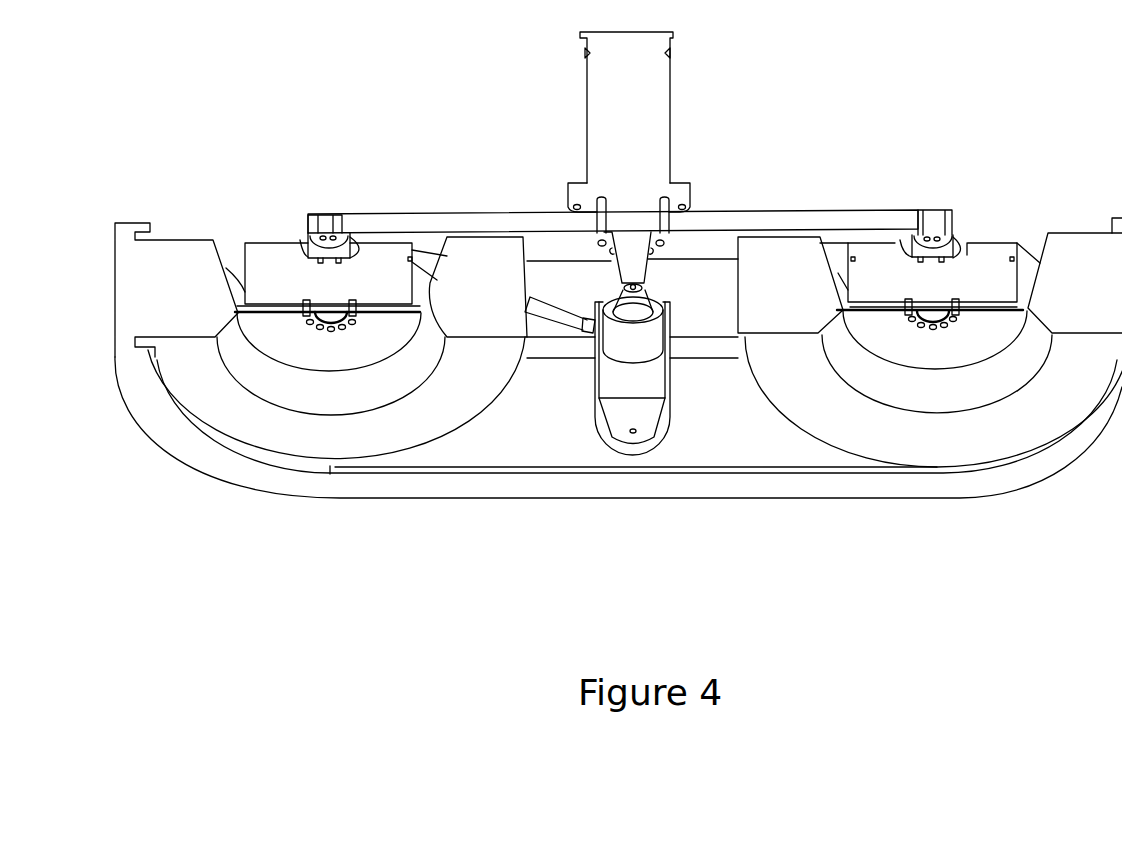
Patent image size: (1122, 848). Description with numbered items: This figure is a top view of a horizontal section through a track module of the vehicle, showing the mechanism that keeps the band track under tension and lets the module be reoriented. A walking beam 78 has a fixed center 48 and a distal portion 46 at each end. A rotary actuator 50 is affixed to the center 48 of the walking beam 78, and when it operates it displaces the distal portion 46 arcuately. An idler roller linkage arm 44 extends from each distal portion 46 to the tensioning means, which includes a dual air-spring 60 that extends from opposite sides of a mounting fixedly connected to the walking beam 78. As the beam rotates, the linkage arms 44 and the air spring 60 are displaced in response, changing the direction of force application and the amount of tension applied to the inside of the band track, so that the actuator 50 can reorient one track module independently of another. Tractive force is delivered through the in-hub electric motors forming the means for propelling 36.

The means for propelling 36 is at (325, 286).
The idler roller linkage arm 44 is at (558, 312).
The distal portion of walking beam 46 is at (325, 222).
The fixed center of walking beam 48 is at (633, 230).
The rotary actuator 50 is at (637, 103).
The dual air-spring 60 is at (643, 340).
The walking beam 78 is at (795, 222).